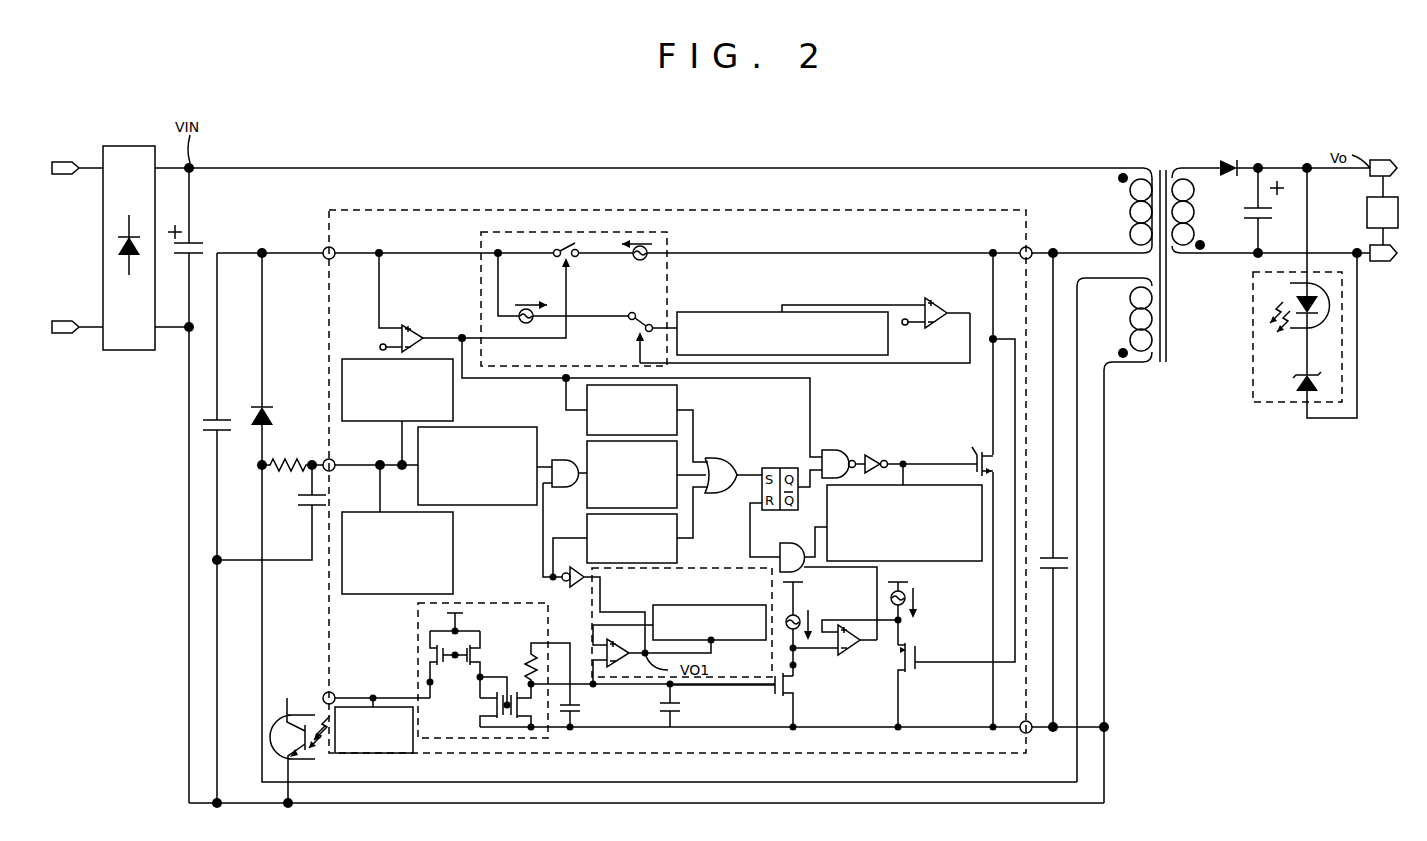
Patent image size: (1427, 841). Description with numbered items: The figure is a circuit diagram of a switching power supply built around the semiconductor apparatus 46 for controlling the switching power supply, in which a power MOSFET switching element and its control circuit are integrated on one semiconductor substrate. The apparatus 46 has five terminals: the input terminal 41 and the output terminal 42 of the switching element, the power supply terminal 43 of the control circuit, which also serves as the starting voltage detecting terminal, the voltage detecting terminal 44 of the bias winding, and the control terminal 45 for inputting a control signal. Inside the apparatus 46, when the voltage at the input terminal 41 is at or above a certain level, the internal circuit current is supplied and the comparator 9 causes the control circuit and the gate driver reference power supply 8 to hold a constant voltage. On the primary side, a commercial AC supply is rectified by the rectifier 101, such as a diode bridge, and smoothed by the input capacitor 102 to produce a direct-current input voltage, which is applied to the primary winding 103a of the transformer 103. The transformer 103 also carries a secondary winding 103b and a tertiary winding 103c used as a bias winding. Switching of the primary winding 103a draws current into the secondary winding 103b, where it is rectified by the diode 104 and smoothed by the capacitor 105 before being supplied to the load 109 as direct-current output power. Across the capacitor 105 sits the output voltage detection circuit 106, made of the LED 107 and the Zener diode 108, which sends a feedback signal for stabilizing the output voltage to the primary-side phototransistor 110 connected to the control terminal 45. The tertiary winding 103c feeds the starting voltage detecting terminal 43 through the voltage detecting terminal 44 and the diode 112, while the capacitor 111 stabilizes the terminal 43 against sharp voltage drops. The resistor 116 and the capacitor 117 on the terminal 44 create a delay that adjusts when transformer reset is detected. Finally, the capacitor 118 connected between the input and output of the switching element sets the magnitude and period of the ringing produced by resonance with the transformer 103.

The rectifier 101 is at (127, 146).
The input capacitor 102 is at (203, 243).
The transformer 103 is at (1163, 170).
The primary winding 103a is at (1130, 212).
The secondary winding 103b is at (1194, 238).
The tertiary winding 103c is at (1130, 310).
The diode 104 is at (1225, 160).
The capacitor 105 is at (1268, 220).
The output voltage detection circuit 106 is at (1253, 330).
The LED 107 is at (1320, 305).
The Zener diode 108 is at (1320, 378).
The load 109 is at (1367, 214).
The phototransistor 110 is at (280, 718).
The capacitor 111 is at (230, 420).
The diode 112 is at (270, 410).
The resistor 116 is at (283, 465).
The capacitor 117 is at (300, 505).
The capacitor 118 is at (1068, 563).
The input terminal 41 is at (1016, 242).
The output terminal 42 is at (1016, 717).
The power supply terminal 43 is at (342, 242).
The voltage detecting terminal 44 is at (342, 455).
The control terminal 45 is at (342, 687).
The semiconductor apparatus for controlling the switching power supply 46 is at (975, 210).
The reference power supply for gate driver 8 is at (888, 335).
The comparator 9 is at (936, 326).